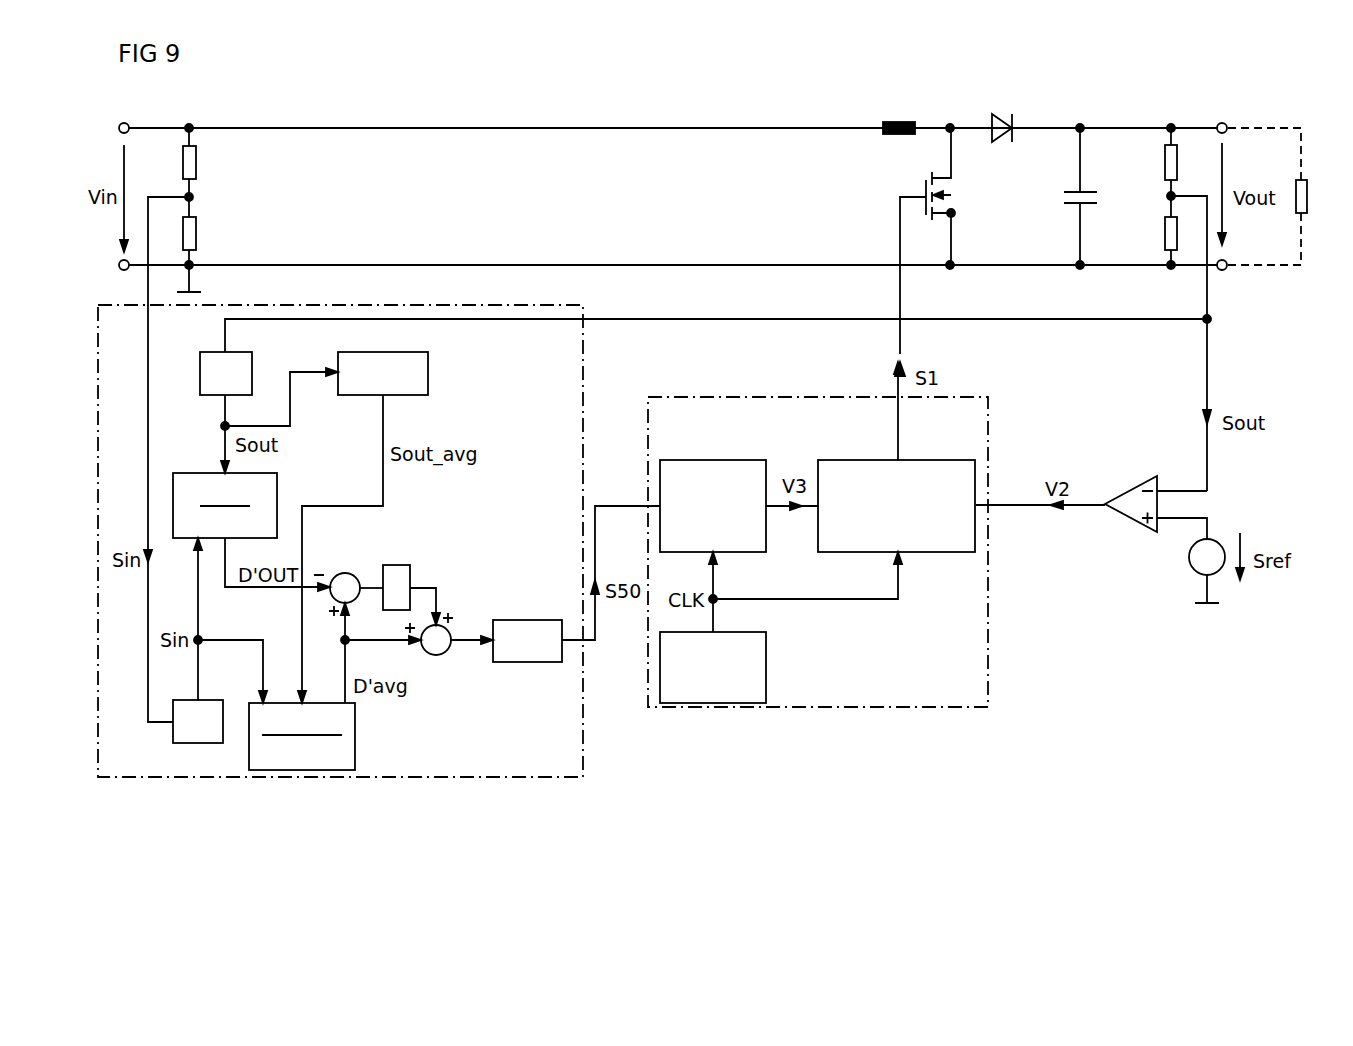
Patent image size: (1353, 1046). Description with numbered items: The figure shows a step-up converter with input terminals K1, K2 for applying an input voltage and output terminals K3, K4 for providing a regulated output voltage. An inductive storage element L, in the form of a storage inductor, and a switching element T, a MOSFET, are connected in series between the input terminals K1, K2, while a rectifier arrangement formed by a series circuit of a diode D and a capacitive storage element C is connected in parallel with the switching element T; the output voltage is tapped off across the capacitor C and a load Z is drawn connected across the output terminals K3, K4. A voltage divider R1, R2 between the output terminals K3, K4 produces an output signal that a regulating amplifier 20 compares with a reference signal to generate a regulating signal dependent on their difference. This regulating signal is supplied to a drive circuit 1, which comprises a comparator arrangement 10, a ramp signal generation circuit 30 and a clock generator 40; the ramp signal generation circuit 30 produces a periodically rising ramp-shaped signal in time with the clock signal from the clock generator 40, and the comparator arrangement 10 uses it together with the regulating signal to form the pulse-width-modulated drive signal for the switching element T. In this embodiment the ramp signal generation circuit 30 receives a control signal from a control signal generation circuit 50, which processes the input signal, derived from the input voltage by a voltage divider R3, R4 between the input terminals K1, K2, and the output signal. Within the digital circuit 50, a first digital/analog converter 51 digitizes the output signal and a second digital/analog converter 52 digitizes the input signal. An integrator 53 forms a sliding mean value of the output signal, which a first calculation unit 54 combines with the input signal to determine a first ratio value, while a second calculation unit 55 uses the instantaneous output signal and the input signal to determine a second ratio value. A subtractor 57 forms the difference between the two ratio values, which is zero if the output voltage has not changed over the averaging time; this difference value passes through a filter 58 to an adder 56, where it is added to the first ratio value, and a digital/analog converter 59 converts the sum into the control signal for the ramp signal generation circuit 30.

The drive circuit 1 is at (990, 632).
The comparator arrangement 10 is at (940, 552).
The regulating amplifier 20 is at (1130, 519).
The ramp signal generation circuit 30 is at (718, 460).
The clock generator 40 is at (766, 657).
The control signal generation circuit 50 is at (583, 742).
The first digital/analog converter 51 is at (252, 366).
The second digital/analog converter 52 is at (173, 740).
The integrator 53 is at (428, 372).
The first calculation unit 54 is at (355, 742).
The second calculation unit 55 is at (200, 473).
The adder 56 is at (437, 655).
The subtractor 57 is at (348, 573).
The filter 58 is at (405, 565).
The digital/analog converter 59 is at (525, 620).
The input terminal K1 is at (118, 128).
The input terminal K2 is at (118, 265).
The output terminal K3 is at (1220, 122).
The output terminal K4 is at (1224, 272).
The voltage divider resistor R1 is at (1165, 156).
The voltage divider resistor R2 is at (1165, 230).
The voltage divider resistor R3 is at (197, 163).
The voltage divider resistor R4 is at (197, 233).
The inductive storage element L is at (900, 122).
The diode D is at (1000, 114).
The switching element T is at (953, 192).
The capacitive storage element C is at (1064, 195).
The load Z is at (1308, 197).